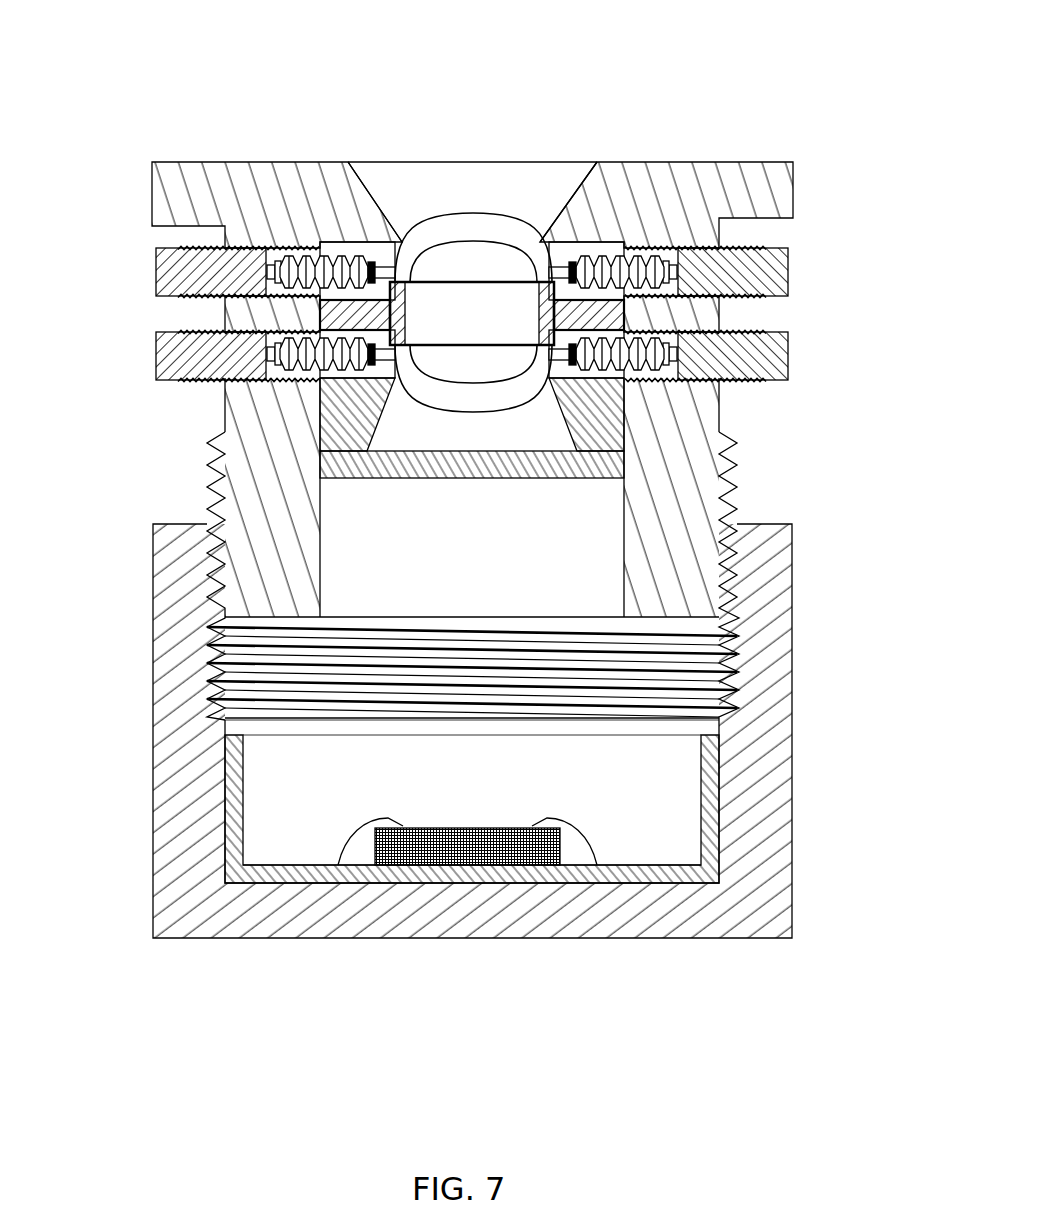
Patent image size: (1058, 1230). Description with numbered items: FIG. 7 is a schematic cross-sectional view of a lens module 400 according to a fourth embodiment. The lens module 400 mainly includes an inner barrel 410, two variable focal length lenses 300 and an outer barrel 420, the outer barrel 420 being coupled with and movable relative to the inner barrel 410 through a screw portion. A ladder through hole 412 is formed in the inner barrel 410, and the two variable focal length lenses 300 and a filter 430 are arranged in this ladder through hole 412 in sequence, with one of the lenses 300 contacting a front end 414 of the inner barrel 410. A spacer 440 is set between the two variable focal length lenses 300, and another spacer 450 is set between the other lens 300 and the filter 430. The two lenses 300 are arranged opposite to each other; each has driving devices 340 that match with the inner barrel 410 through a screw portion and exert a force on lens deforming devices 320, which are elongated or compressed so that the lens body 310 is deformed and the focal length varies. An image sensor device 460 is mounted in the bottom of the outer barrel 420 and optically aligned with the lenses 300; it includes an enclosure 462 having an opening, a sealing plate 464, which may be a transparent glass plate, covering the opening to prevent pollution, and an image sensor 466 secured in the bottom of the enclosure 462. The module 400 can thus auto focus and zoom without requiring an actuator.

The lens module 400 is at (486, 31).
The inner barrel 410 is at (170, 198).
The ladder through hole 412 is at (537, 190).
The front end 414 is at (757, 186).
The variable focal length lens 300 is at (170, 268).
The driving device 340 is at (765, 275).
The lens deforming device 320 is at (343, 265).
The lens body 310 is at (442, 237).
The spacer 440 is at (598, 315).
The spacer 450 is at (607, 423).
The filter 430 is at (427, 467).
The outer barrel 420 is at (183, 845).
The enclosure 462 is at (707, 806).
The sealing plate 464 is at (673, 728).
The image sensor 466 is at (490, 843).
The image sensor device 460 is at (650, 884).